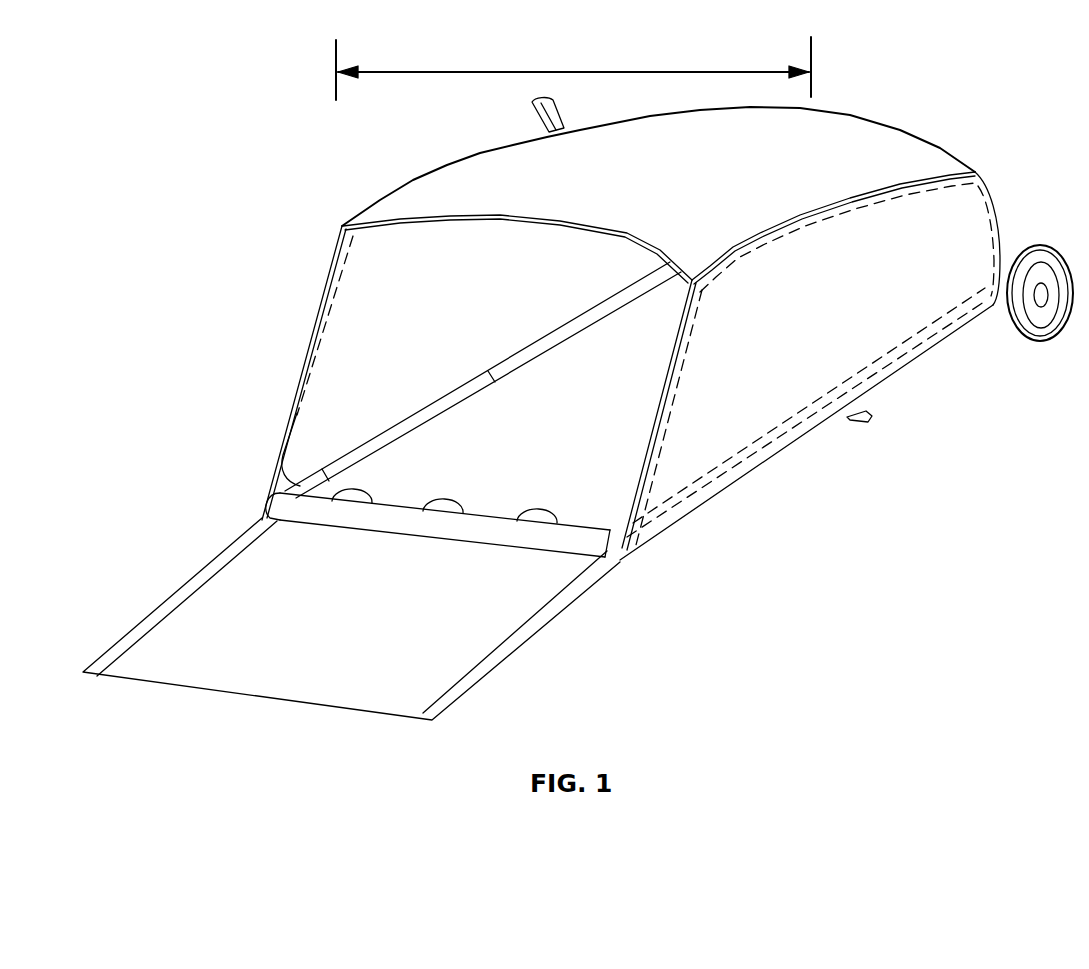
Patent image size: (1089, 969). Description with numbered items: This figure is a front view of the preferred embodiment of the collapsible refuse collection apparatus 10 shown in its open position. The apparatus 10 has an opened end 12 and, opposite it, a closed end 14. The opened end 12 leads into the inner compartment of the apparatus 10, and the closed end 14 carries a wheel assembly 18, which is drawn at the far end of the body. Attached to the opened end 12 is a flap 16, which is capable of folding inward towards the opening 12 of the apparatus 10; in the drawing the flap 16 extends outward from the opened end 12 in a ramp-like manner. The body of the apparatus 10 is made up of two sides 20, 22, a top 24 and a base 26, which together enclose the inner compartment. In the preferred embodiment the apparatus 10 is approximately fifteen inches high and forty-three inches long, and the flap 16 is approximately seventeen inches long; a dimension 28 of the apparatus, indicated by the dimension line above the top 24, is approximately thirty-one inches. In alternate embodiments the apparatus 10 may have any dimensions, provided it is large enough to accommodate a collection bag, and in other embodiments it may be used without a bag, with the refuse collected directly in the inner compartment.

The apparatus 10 is at (172, 128).
The opened end 12 is at (591, 430).
The closed end 14 is at (996, 206).
The flap 16 is at (379, 623).
The wheel assembly 18 is at (1022, 340).
The side 20 is at (819, 315).
The side 22 is at (436, 328).
The top 24 is at (781, 150).
The base 26 is at (265, 495).
The dimension 28 is at (612, 72).